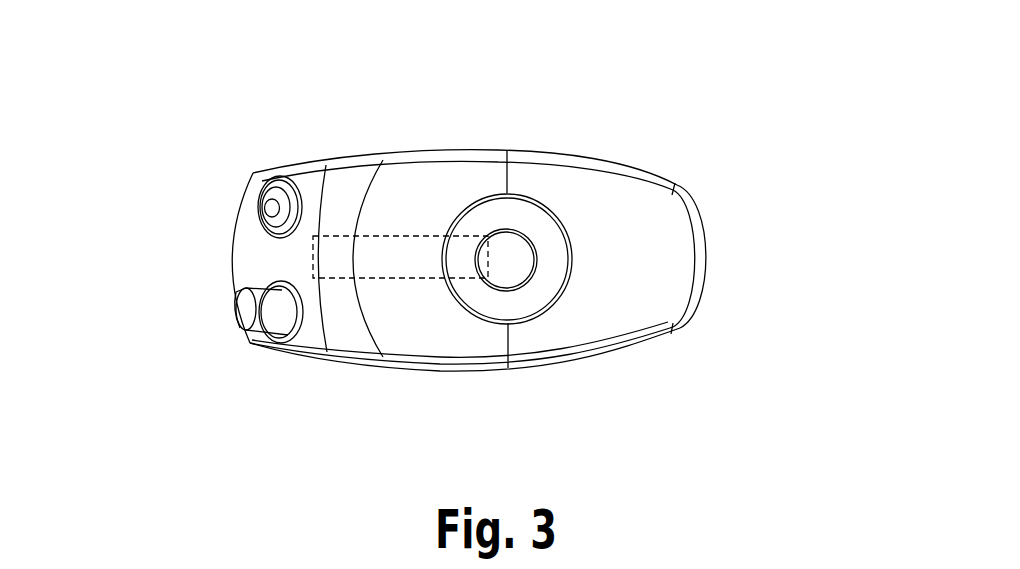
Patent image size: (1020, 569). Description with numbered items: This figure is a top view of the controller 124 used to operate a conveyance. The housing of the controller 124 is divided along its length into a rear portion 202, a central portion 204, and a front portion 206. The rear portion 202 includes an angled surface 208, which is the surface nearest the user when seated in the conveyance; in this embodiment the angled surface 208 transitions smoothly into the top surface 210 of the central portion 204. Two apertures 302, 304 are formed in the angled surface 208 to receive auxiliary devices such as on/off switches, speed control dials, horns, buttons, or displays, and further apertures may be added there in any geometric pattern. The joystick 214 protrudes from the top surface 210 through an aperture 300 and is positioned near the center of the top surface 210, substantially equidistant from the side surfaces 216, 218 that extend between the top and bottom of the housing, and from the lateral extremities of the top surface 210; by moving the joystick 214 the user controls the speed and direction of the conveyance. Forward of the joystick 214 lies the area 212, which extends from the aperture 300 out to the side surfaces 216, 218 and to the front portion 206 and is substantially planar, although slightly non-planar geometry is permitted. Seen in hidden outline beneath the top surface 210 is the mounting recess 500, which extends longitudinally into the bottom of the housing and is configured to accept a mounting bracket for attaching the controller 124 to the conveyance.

The controller 124 is at (727, 135).
The rear portion 202 is at (178, 193).
The central portion 204 is at (407, 87).
The front portion 206 is at (718, 205).
The angled surface 208 is at (260, 258).
The top surface 210 is at (410, 192).
The area 212 is at (617, 243).
The joystick 214 is at (498, 229).
The side surface 216 is at (463, 370).
The side surface 218 is at (520, 150).
The aperture 300 is at (515, 323).
The aperture 302 is at (275, 178).
The aperture 304 is at (293, 343).
The mounting recess 500 is at (385, 284).